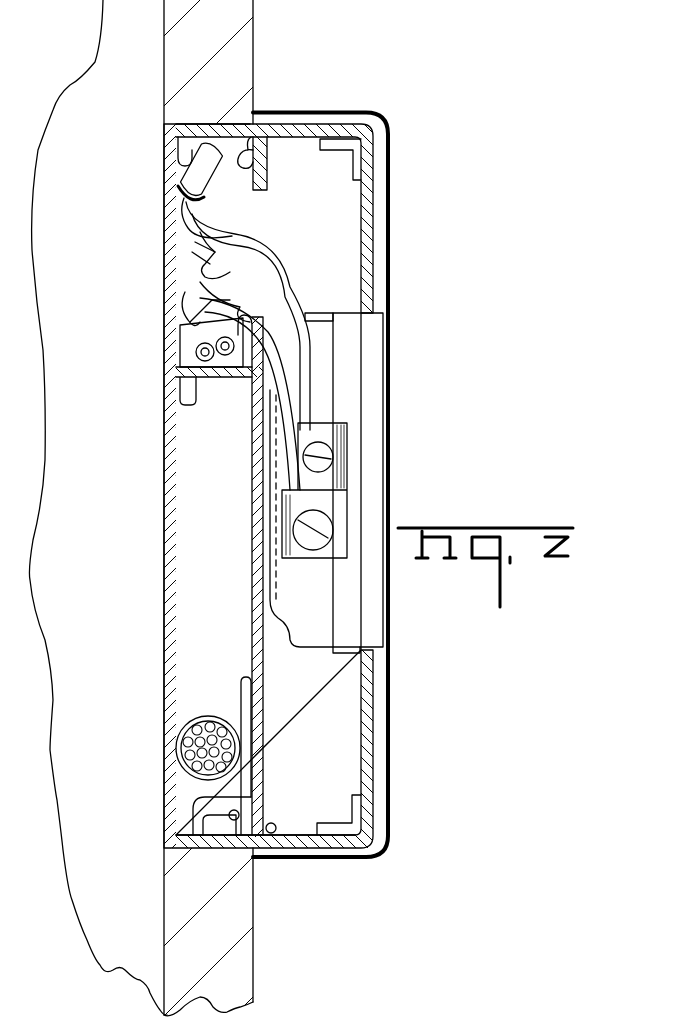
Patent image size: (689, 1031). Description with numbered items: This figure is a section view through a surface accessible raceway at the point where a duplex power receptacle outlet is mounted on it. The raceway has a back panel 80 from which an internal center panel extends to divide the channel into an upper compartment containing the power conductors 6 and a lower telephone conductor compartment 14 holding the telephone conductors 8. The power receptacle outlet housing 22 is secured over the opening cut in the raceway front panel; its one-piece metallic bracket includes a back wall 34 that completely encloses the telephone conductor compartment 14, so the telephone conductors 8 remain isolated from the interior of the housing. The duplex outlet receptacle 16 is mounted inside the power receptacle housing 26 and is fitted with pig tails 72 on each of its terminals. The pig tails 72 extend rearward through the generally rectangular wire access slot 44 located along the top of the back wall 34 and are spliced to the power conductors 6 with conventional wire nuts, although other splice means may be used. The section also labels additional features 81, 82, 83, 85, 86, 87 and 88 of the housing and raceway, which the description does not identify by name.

The power conductors 6 is at (242, 218).
The telephone conductors 8 is at (203, 718).
The telephone conductor compartment 14 is at (210, 497).
The duplex outlet receptacle 16 is at (362, 368).
The power receptacle outlet housing 22 is at (383, 741).
The power receptacle housing 26 is at (390, 150).
The back wall 34 is at (252, 613).
The wire access slot 44 is at (268, 203).
The pig tails 72 is at (288, 276).
The back panel 80 is at (168, 566).
The housing top flange 81 is at (212, 124).
The shelf 82 is at (223, 377).
The housing floor 83 is at (207, 842).
The clamp 85 is at (243, 336).
The hook 86 is at (247, 699).
The clip 87 is at (243, 150).
The bracket 88 is at (274, 836).